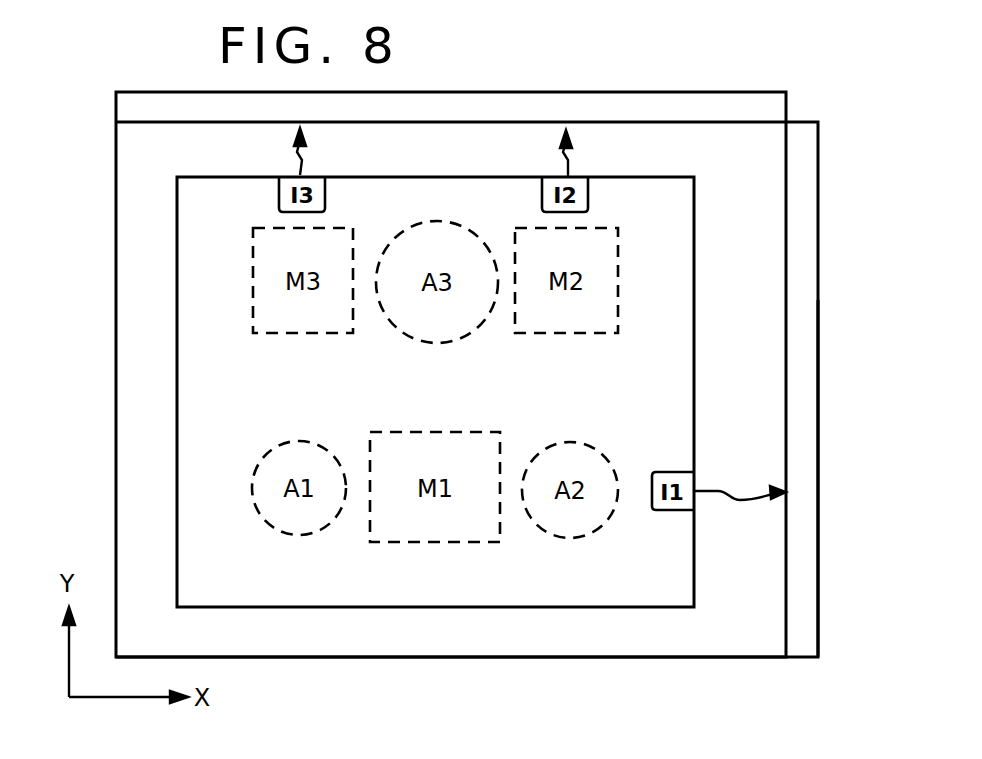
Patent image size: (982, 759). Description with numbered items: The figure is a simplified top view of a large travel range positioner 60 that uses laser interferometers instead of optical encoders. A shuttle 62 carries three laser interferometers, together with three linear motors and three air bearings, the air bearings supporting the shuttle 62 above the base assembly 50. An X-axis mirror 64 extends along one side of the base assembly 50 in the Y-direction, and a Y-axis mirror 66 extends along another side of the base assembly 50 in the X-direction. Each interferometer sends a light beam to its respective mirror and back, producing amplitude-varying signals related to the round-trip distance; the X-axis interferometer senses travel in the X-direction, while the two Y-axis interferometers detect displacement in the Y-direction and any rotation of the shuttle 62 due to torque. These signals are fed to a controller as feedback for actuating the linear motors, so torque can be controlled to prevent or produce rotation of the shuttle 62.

The base assembly 50 is at (705, 660).
The large travel range positioner 60 is at (876, 338).
The shuttle 62 is at (562, 608).
The X-axis mirror 64 is at (820, 582).
The Y-axis mirror 66 is at (148, 122).